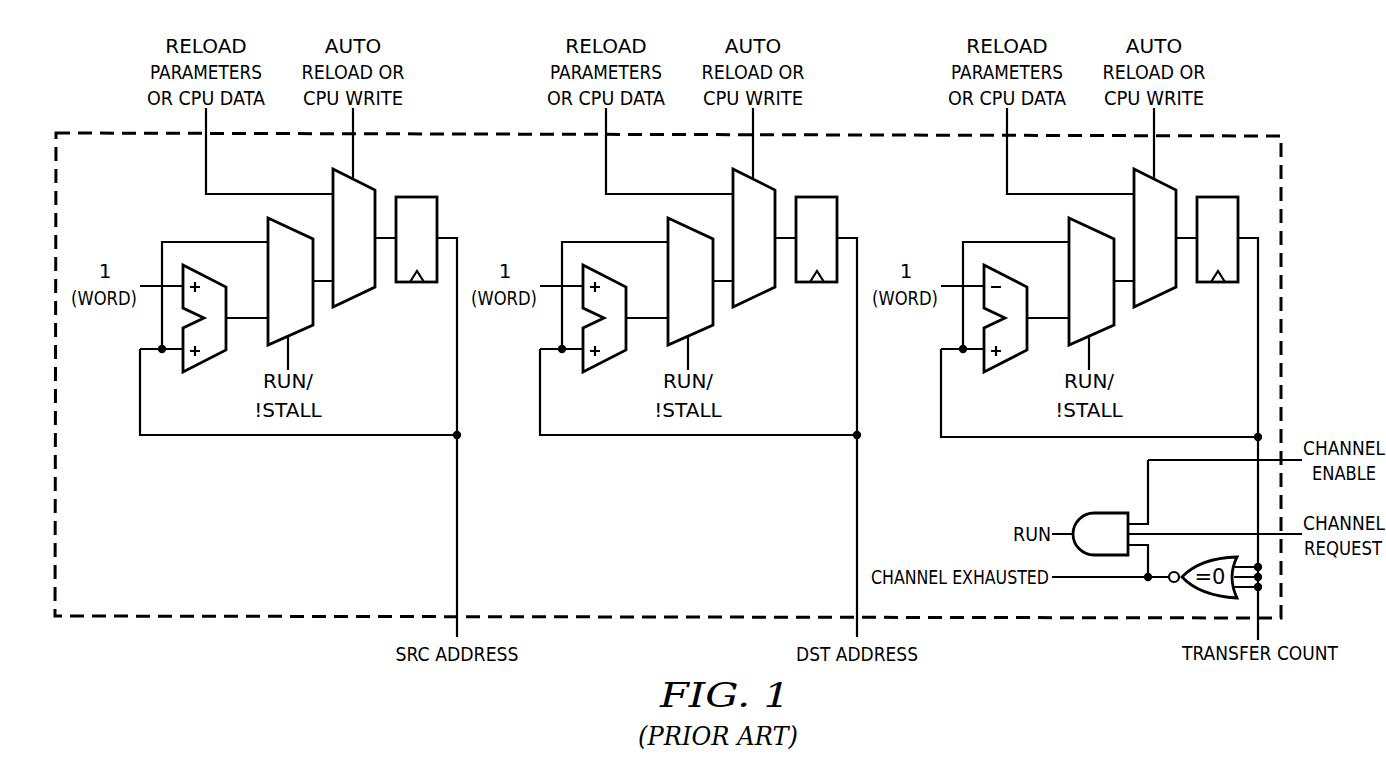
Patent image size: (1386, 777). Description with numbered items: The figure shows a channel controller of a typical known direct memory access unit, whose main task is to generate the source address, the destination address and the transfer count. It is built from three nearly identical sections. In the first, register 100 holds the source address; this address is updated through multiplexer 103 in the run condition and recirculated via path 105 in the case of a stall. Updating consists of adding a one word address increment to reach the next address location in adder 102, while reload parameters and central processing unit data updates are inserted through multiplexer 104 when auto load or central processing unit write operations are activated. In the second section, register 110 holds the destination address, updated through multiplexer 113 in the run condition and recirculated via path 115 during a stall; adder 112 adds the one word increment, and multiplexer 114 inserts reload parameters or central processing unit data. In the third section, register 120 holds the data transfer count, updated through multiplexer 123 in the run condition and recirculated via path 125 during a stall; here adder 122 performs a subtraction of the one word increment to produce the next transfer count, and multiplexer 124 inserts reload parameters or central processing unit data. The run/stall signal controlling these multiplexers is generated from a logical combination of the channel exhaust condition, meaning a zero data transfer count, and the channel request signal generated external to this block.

The register 100 is at (418, 197).
The adder 102 is at (205, 362).
The multiplexer 103 is at (266, 230).
The multiplexer 104 is at (352, 299).
The path 105 is at (179, 242).
The register 110 is at (822, 212).
The adder 112 is at (608, 339).
The multiplexer 113 is at (657, 276).
The multiplexer 114 is at (760, 257).
The path 115 is at (607, 270).
The register 120 is at (1223, 212).
The adder 122 is at (1009, 339).
The multiplexer 123 is at (1058, 276).
The multiplexer 124 is at (1161, 257).
The path 125 is at (1008, 270).